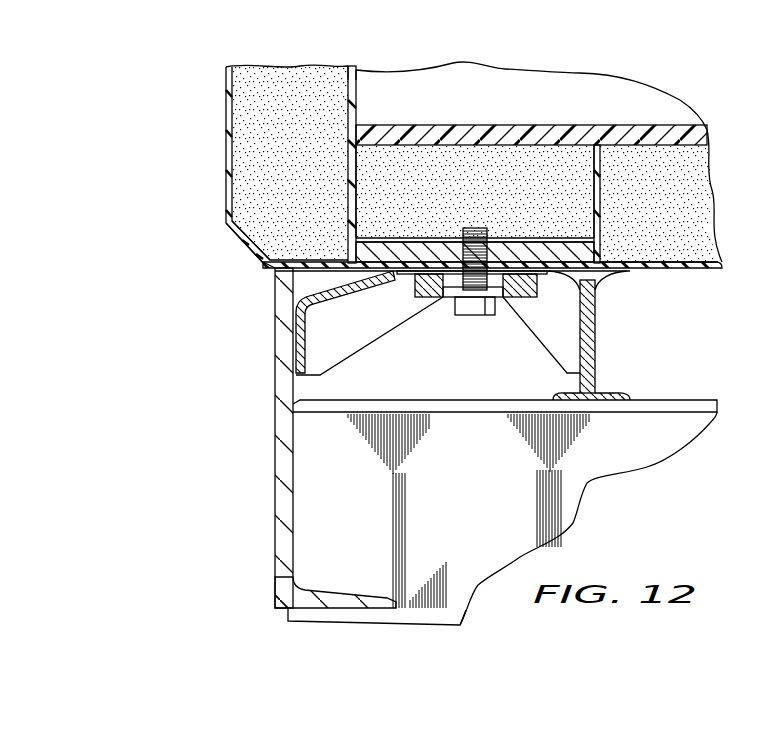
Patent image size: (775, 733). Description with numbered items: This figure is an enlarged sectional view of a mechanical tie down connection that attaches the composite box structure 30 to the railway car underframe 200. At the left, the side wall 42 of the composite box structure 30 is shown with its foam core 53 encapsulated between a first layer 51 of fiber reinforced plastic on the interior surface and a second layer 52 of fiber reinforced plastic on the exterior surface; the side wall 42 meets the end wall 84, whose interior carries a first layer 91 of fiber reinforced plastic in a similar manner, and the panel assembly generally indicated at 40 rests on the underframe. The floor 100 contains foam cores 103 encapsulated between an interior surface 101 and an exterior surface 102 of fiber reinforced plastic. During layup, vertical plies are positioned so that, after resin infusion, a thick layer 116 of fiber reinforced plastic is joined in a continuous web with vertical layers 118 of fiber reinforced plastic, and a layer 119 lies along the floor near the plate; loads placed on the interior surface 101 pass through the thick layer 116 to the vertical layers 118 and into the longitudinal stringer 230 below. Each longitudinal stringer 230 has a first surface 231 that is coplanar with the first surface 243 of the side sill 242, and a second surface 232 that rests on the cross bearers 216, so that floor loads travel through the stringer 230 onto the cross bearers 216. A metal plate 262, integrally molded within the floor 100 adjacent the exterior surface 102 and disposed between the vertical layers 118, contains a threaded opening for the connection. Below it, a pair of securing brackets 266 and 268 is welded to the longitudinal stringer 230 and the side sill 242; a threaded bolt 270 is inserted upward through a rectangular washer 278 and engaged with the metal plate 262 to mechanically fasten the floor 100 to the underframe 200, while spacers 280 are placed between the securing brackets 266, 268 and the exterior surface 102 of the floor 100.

The composite box structure 30 is at (210, 102).
The wall panel assembly 40 is at (188, 154).
The side wall 42 is at (223, 211).
The first layer of fiber reinforced plastic 51 is at (366, 78).
The second layer of fiber reinforced plastic 52 is at (227, 82).
The foam core 53 is at (302, 156).
The end wall 84 is at (420, 68).
The first layer of fiber reinforced plastic 91 is at (547, 82).
The floor 100 is at (703, 272).
The interior surface 101 is at (463, 130).
The exterior surface 102 is at (672, 269).
The foam core 103 is at (495, 197).
The thick layer of fiber reinforced plastic 116 is at (668, 122).
The vertical layers of fiber reinforced plastic 118 is at (358, 150).
The adhesive layer 119 is at (407, 237).
The railway car underframe 200 is at (214, 425).
The cross bearers 216 is at (487, 554).
The longitudinal stringer 230 is at (595, 368).
The first surface 231 is at (645, 262).
The second surface 232 is at (597, 403).
The side sill 242 is at (275, 522).
The first surface 243 is at (262, 257).
The metal plate 262 is at (540, 238).
The securing bracket 266 is at (297, 338).
The securing bracket 268 is at (588, 332).
The threaded bolt 270 is at (474, 318).
The rectangular washer 278 is at (443, 298).
The spacer 280 is at (407, 273).